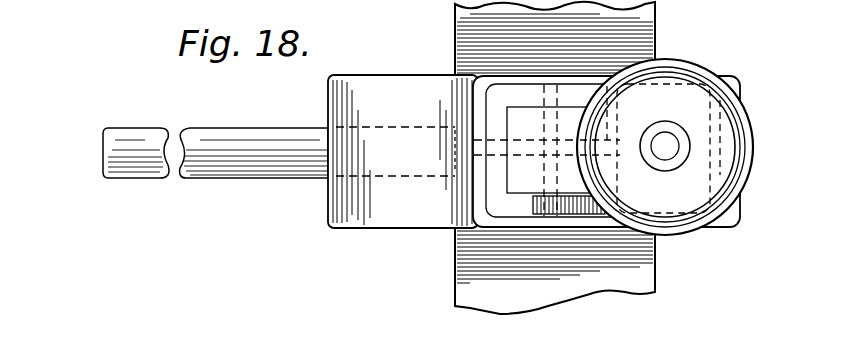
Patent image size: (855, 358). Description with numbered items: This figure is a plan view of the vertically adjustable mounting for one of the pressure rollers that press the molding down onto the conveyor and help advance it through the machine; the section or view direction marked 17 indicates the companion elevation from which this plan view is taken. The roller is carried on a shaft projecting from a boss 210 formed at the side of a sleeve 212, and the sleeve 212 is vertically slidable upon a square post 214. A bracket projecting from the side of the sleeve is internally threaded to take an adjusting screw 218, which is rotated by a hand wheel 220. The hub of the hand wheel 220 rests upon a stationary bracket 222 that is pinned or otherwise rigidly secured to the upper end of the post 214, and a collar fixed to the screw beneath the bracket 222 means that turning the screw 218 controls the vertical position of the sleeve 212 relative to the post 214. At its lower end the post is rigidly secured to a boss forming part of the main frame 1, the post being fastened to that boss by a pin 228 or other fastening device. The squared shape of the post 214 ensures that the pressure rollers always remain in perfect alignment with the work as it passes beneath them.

The main frame 1 is at (655, 27).
The section line 17 is at (103, 157).
The boss 210 is at (384, 82).
The sleeve 212 is at (560, 220).
The square post 214 is at (523, 185).
The adjusting screw 218 is at (665, 146).
The hand wheel 220 is at (680, 197).
The stationary bracket 222 is at (530, 209).
The pin 228 is at (480, 156).